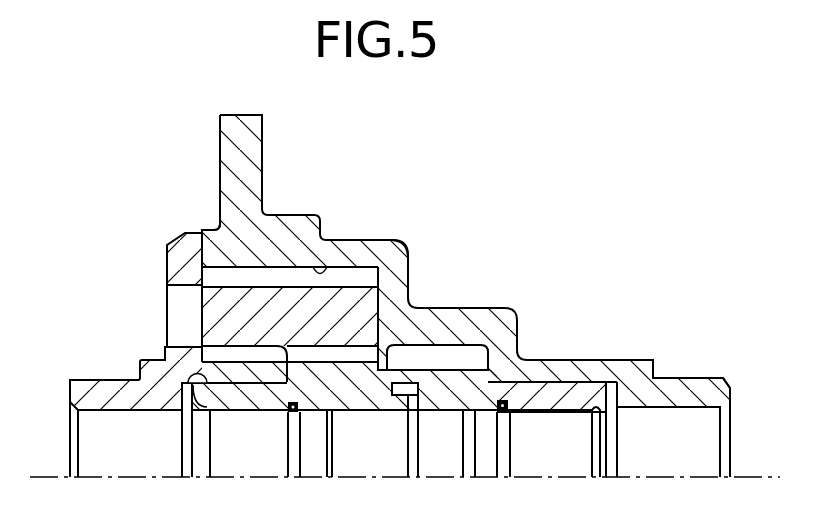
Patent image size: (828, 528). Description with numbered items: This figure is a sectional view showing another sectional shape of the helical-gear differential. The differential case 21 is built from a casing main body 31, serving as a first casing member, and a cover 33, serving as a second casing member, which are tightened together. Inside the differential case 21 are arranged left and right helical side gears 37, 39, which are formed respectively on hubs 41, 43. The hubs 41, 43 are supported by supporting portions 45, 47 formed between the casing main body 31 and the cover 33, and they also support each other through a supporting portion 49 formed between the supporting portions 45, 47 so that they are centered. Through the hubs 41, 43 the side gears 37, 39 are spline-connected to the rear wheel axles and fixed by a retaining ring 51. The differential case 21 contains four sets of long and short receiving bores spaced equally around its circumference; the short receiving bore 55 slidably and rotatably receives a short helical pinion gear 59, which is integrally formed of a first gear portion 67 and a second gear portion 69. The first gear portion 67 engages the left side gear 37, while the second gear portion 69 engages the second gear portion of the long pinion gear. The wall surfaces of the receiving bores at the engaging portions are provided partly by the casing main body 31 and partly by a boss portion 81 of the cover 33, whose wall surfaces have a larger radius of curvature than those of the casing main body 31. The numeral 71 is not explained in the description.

The differential case 21 is at (198, 228).
The casing main body 31 is at (293, 214).
The cover 33 is at (166, 236).
The left helical side gear 37 is at (385, 322).
The right helical side gear 39 is at (462, 356).
The hub 41 is at (237, 398).
The hub 43 is at (556, 396).
The supporting portion 45 is at (181, 412).
The supporting portion 47 is at (600, 372).
The supporting portion 49 is at (384, 384).
The retaining ring 51 is at (502, 411).
The short receiving bore 55 is at (328, 266).
The short helical pinion gear 59 is at (386, 260).
The first gear portion 67 is at (341, 284).
The second gear portion 69 is at (233, 283).
The spacer 71 is at (183, 292).
The boss portion 81 is at (256, 384).